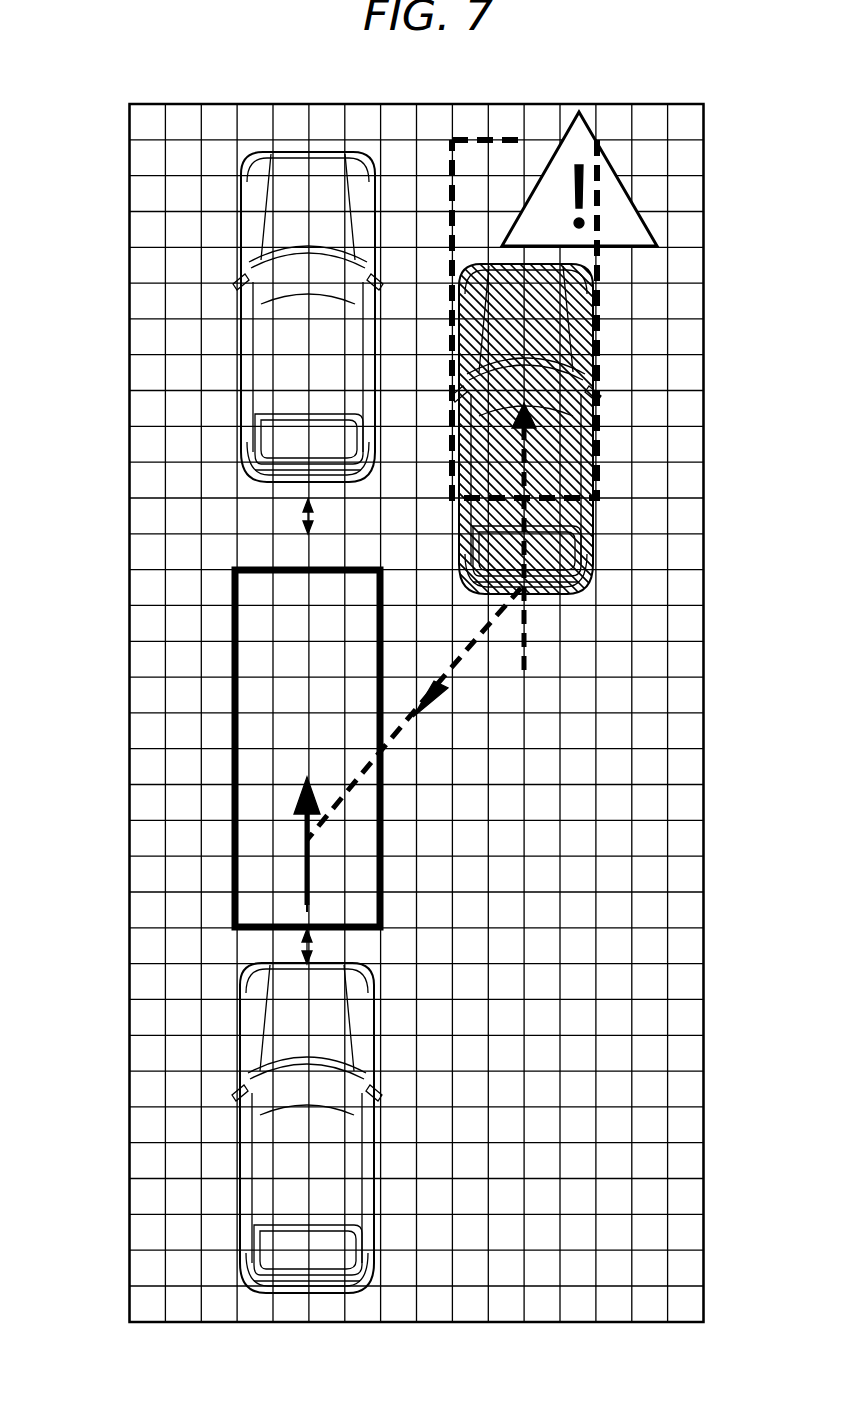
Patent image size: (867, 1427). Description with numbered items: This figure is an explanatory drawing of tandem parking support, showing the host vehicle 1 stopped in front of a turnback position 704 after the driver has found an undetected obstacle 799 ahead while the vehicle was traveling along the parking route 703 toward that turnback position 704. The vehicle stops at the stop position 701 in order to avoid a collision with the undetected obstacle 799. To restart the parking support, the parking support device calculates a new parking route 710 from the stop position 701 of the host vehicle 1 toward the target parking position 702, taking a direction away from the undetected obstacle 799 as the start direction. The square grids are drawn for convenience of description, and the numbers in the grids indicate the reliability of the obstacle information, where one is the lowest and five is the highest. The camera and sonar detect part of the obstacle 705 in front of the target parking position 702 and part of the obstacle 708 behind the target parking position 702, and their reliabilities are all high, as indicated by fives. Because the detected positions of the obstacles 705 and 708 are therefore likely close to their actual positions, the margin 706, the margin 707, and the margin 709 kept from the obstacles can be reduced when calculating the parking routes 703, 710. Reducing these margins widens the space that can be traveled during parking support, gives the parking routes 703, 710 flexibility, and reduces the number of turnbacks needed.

The host vehicle 1 is at (585, 580).
The stop position 701 is at (585, 540).
The target parking position 702 is at (230, 657).
The parking route 703 is at (525, 630).
The turnback position 704 is at (598, 298).
The obstacle 705 is at (295, 263).
The margin 706 is at (396, 490).
The margin 707 is at (295, 513).
The obstacle 708 is at (290, 1127).
The margin 709 is at (300, 955).
The parking route 710 is at (300, 830).
The undetected obstacle 799 is at (610, 160).